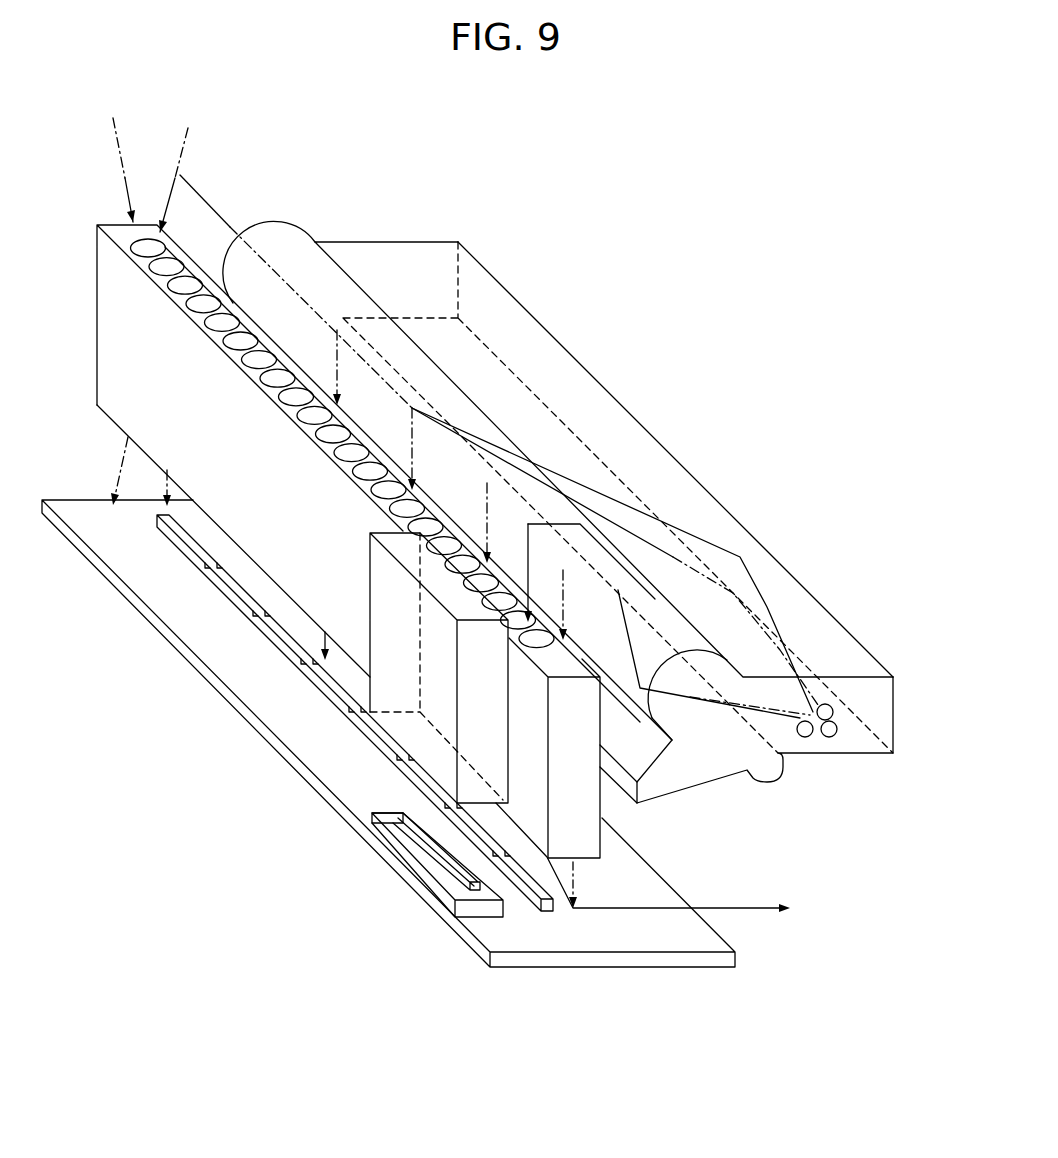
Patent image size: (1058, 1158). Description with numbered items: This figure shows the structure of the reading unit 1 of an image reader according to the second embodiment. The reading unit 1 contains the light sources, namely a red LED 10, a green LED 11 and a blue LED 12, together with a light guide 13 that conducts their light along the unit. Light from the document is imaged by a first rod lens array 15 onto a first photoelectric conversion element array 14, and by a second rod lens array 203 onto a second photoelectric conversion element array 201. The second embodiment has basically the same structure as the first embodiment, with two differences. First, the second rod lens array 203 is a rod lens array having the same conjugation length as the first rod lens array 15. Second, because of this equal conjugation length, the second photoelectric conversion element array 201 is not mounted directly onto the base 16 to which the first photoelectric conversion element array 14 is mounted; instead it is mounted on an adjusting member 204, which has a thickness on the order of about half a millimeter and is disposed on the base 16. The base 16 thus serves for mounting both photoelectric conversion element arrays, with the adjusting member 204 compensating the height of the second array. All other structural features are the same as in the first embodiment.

The reading unit 1 is at (600, 327).
The red LED 10 is at (833, 712).
The green LED 11 is at (832, 737).
The blue LED 12 is at (805, 737).
The light guide 13 is at (648, 430).
The first photoelectric conversion element array 14 is at (268, 642).
The first rod lens array 15 is at (97, 345).
The base 16 is at (420, 887).
The second photoelectric conversion element array 201 is at (372, 822).
The second rod lens array 203 is at (370, 572).
The adjusting member 204 is at (410, 860).